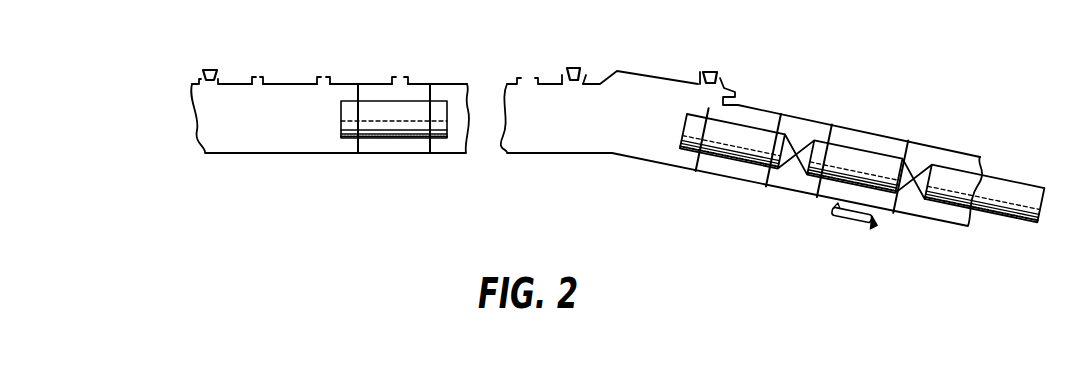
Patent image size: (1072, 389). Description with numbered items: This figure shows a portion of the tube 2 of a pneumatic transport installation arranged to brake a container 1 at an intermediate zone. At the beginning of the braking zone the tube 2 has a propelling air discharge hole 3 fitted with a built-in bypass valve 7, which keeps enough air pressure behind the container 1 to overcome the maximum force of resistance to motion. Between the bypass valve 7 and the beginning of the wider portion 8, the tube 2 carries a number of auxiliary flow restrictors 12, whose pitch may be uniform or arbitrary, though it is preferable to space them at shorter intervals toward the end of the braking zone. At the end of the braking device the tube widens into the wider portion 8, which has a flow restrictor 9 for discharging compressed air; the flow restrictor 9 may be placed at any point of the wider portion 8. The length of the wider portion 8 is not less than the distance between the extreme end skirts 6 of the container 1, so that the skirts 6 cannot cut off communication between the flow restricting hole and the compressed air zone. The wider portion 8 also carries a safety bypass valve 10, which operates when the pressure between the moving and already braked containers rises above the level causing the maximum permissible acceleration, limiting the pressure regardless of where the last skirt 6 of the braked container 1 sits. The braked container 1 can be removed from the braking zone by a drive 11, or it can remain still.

The container 1 is at (365, 124).
The tube 2 is at (262, 146).
The propelling air discharge hole 3 is at (225, 63).
The end skirts 6 is at (357, 155).
The bypass valve 7 is at (210, 70).
The wider portion 8 is at (622, 108).
The flow restrictor 9 is at (733, 88).
The safety bypass valve 10 is at (710, 74).
The drive 11 is at (845, 223).
The auxiliary flow restrictors 12 is at (398, 73).